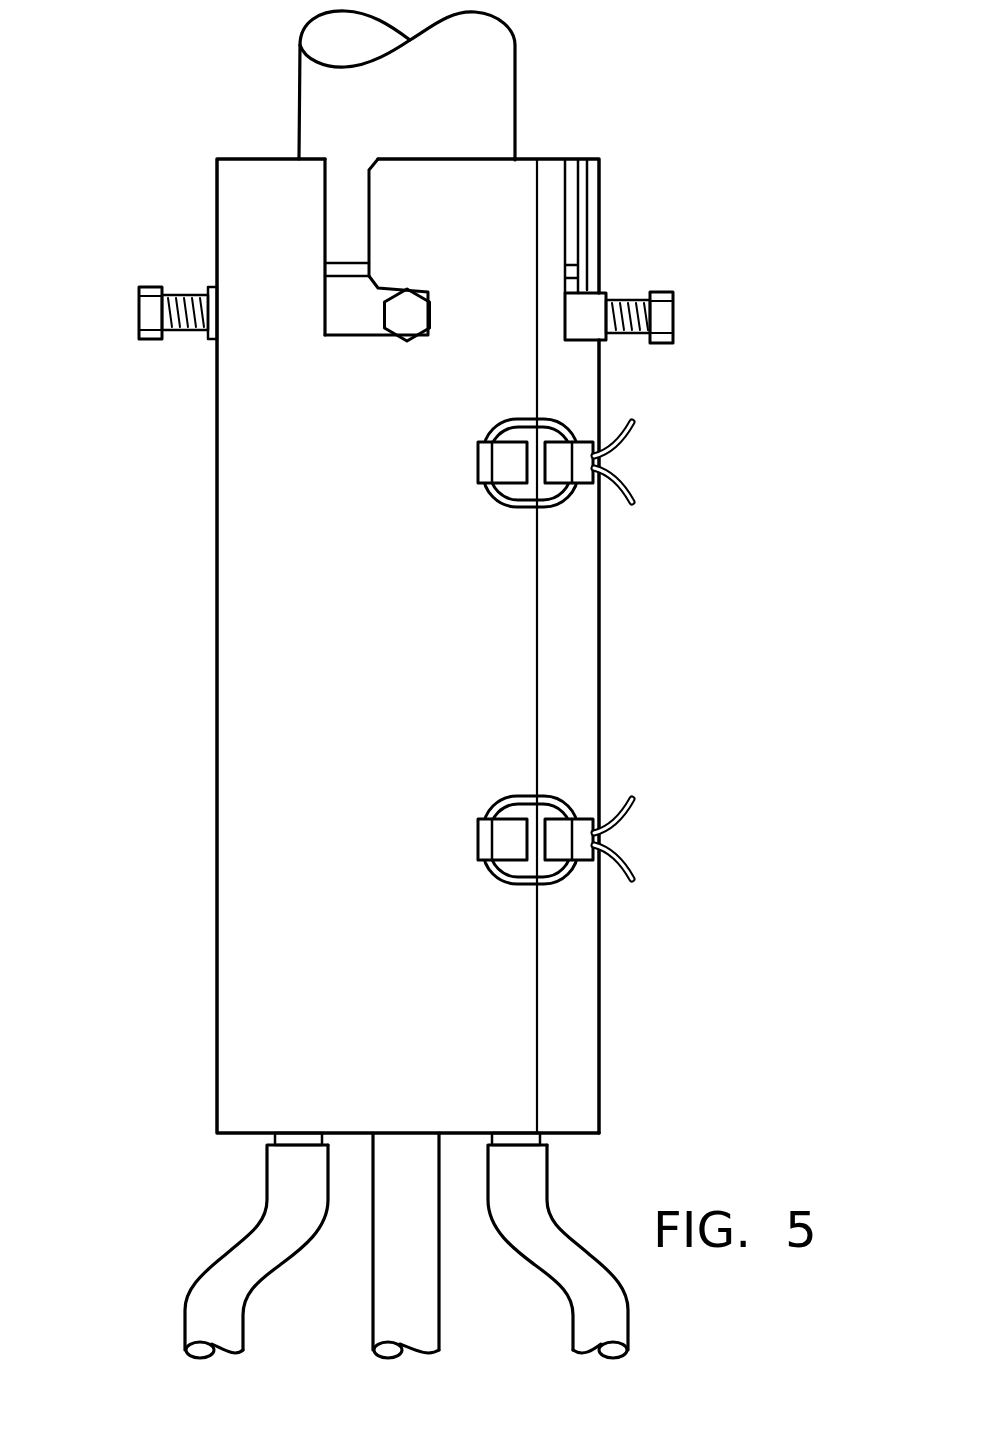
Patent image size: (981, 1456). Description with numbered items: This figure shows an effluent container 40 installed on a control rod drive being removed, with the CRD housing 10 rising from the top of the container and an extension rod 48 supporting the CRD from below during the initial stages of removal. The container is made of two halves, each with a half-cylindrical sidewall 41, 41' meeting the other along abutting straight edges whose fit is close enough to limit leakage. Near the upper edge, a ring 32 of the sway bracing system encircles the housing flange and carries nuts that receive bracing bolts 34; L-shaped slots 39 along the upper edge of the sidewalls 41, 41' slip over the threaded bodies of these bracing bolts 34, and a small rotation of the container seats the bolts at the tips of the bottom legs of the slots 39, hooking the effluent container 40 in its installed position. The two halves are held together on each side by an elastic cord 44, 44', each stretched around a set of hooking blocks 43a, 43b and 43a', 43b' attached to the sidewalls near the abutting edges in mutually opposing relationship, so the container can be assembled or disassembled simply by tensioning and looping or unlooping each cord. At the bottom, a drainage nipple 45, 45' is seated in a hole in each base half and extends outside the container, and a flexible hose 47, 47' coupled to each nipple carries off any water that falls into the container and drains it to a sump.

The CRD housing 10 is at (517, 93).
The ring 32 is at (343, 322).
The bracing bolt 34 is at (142, 312).
The L-shaped slot 39 is at (369, 224).
The effluent container 40 is at (409, 646).
The half-cylindrical sidewall 41 is at (353, 646).
The half-cylindrical sidewall 41' is at (539, 646).
The hooking block 43a is at (450, 468).
The hooking block 43b is at (611, 487).
The hooking block 43a' is at (437, 851).
The hooking block 43b' is at (614, 872).
The elastic cord 44 is at (570, 438).
The elastic cord 44' is at (581, 812).
The drainage nipple 45 is at (240, 1154).
The drainage nipple 45' is at (567, 1154).
The flexible hose 47 is at (218, 1251).
The flexible hose 47' is at (608, 1251).
The extension rod 48 is at (440, 1276).